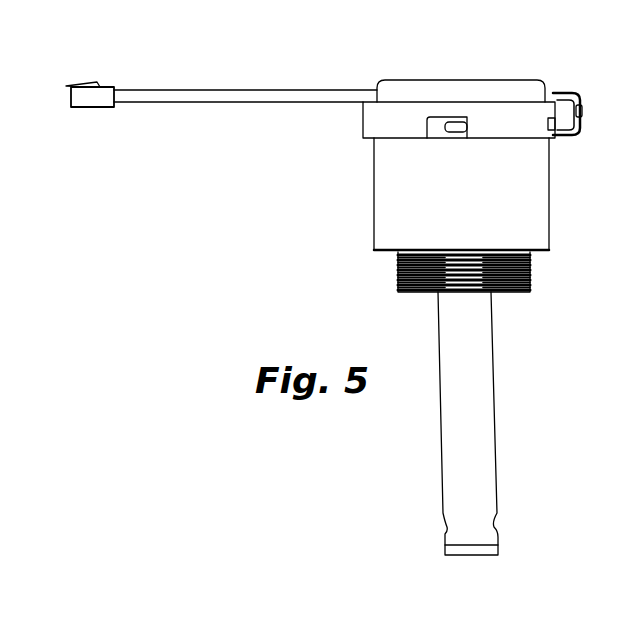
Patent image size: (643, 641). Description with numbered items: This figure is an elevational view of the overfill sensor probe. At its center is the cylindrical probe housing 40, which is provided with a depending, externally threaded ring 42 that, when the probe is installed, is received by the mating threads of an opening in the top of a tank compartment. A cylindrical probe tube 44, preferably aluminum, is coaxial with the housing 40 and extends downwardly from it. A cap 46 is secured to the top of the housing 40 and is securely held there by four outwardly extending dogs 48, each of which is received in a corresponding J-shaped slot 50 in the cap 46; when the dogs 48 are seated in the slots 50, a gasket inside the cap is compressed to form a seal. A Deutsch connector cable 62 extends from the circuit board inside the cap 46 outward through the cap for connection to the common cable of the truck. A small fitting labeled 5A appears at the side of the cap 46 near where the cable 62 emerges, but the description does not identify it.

The Deutsch connector cable 62 is at (172, 90).
The cap 46 is at (507, 82).
The clip 5A is at (557, 92).
The probe housing 40 is at (548, 190).
The J-shaped slot 50 is at (431, 128).
The dog 48 is at (458, 125).
The externally threaded ring 42 is at (530, 278).
The probe tube 44 is at (492, 388).